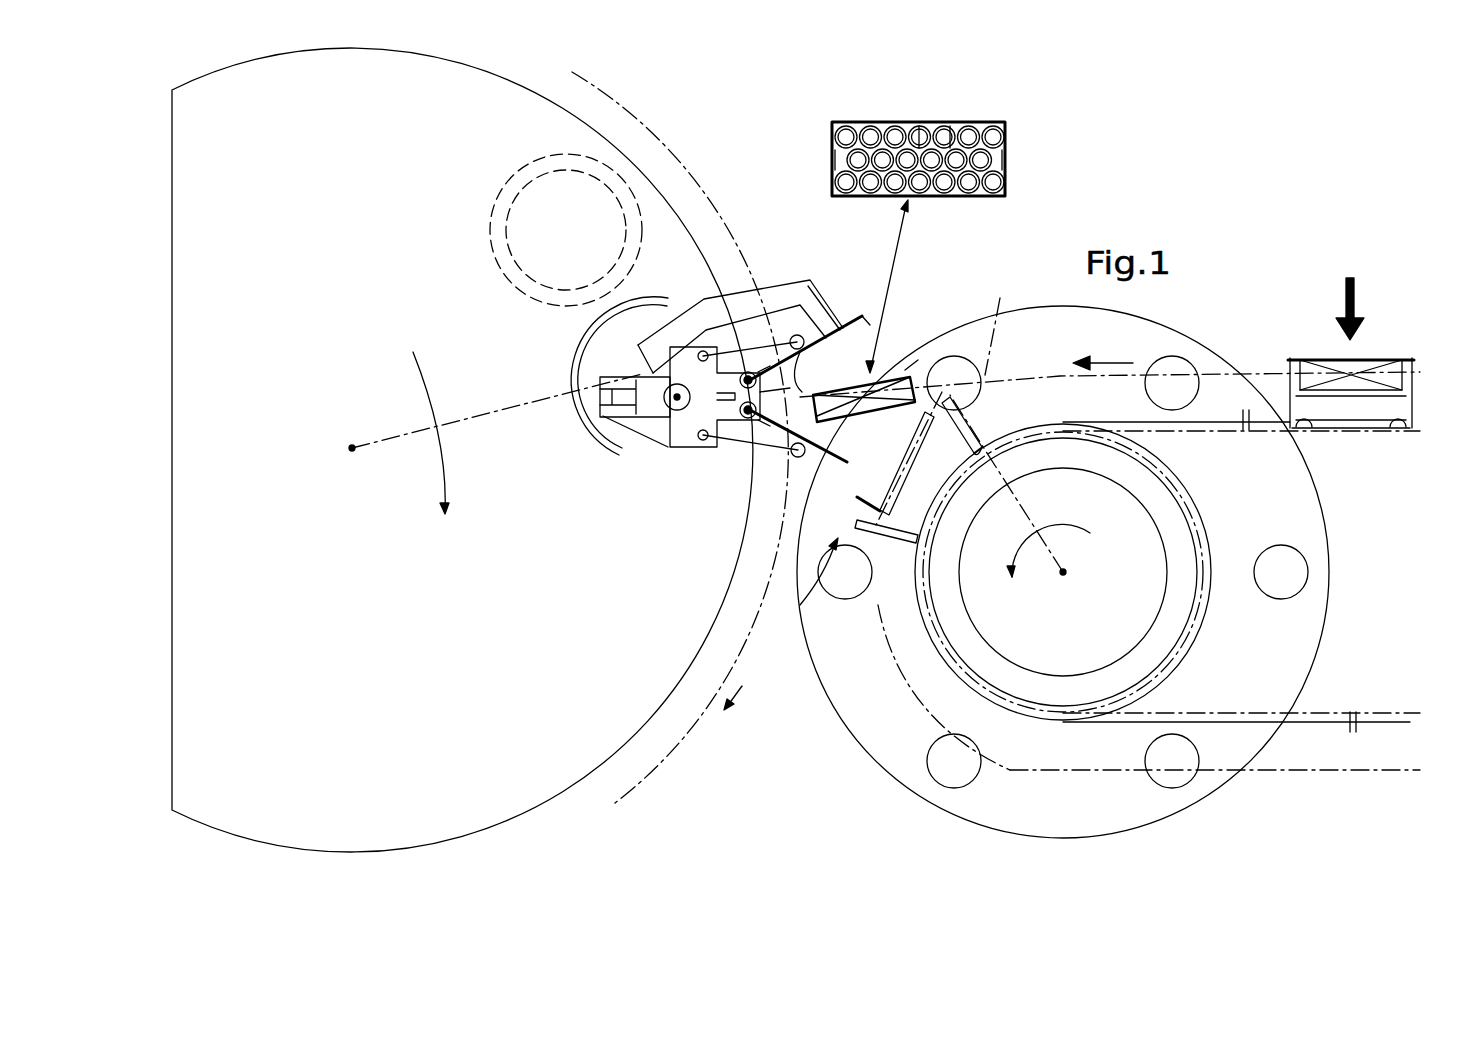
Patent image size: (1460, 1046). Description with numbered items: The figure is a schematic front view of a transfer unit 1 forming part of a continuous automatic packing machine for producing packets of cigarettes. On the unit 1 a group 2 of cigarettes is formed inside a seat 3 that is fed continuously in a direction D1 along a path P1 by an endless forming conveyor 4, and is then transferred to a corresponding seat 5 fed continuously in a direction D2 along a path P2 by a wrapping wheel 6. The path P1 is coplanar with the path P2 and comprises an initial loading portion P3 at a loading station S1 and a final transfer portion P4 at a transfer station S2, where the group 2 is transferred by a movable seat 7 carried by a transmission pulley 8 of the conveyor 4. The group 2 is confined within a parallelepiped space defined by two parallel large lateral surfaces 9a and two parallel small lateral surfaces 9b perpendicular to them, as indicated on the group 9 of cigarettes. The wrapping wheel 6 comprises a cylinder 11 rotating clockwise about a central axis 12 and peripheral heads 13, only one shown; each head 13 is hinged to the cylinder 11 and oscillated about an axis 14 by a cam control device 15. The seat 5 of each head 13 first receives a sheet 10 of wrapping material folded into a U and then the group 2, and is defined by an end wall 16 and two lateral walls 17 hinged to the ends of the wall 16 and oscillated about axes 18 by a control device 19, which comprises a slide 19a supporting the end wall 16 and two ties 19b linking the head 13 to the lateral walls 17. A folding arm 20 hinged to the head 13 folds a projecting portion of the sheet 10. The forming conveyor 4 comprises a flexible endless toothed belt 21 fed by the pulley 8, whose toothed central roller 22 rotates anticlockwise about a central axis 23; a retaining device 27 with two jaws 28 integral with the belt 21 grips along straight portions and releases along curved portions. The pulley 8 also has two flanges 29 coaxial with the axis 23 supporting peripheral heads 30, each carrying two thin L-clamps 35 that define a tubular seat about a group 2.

The transfer unit 1 is at (775, 732).
The group of cigarettes 2 is at (1393, 360).
The seat 3 is at (883, 476).
The forming conveyor 4 is at (1230, 412).
The seat 5 is at (862, 330).
The wrapping wheel 6 is at (575, 802).
The seat 7 is at (898, 363).
The transmission pulley 8 is at (1060, 305).
The cassette 9 is at (918, 159).
The large lateral surfaces 9a is at (918, 120).
The small lateral surfaces 9b is at (828, 159).
The sheet of wrapping material 10 is at (845, 355).
The cylinder 11 is at (466, 102).
The central axis 12 is at (350, 440).
The peripheral head 13 is at (672, 452).
The axis 14 is at (630, 442).
The cam control device 15 is at (568, 362).
The end wall 16 is at (792, 341).
The lateral walls 17 is at (850, 437).
The axes 18 is at (749, 371).
The control device 19 is at (722, 446).
The slide 19a is at (742, 470).
The ties 19b is at (760, 300).
The folding device or arm 20 is at (700, 298).
The toothed belt 21 is at (1322, 428).
The toothed central roller 22 is at (1152, 557).
The central axis 23 is at (1063, 572).
The retaining device 27 is at (801, 588).
The jaws 28 is at (988, 428).
The flanges 29 is at (1002, 812).
The peripheral heads 30 is at (913, 350).
The L-clamps 35 is at (952, 120).
The direction D1 is at (1110, 362).
The direction D2 is at (738, 700).
The path P1 is at (1283, 778).
The path P2 is at (648, 122).
The initial loading portion P3 is at (1272, 372).
The final transfer portion P4 is at (1002, 318).
The loading station S1 is at (1368, 335).
The transfer station S2 is at (850, 250).